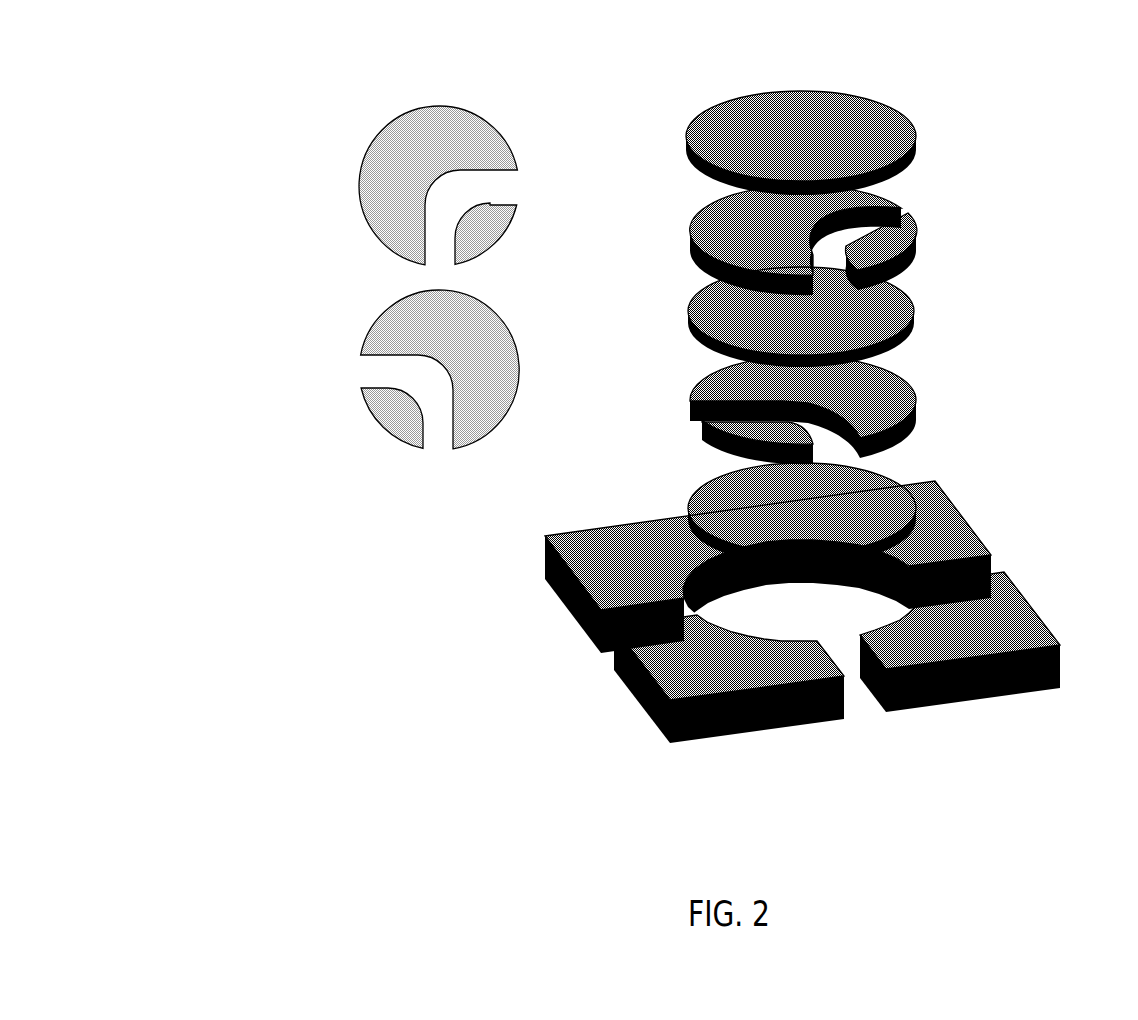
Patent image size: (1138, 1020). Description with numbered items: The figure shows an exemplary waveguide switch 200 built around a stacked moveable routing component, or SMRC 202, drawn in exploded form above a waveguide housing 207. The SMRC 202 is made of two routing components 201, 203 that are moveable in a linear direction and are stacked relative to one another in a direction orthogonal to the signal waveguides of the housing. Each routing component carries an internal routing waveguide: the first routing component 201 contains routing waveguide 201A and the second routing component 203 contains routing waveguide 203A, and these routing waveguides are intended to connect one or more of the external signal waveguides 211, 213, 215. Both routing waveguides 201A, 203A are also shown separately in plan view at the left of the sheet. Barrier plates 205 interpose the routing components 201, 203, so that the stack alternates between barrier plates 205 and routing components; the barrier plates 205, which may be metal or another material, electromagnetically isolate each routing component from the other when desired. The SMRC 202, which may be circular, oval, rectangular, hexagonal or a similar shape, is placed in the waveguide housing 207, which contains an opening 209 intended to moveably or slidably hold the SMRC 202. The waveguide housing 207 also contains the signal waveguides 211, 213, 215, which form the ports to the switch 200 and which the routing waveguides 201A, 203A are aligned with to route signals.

The waveguide switch 200 is at (202, 50).
The routing component 201 is at (488, 213).
The routing waveguide 201A is at (500, 187).
The stacked moveable routing component 202 is at (1015, 210).
The routing component 203 is at (488, 368).
The routing waveguide 203A is at (353, 368).
The barrier plate 205 is at (907, 460).
The waveguide housing 207 is at (975, 520).
The opening 209 is at (717, 565).
The signal waveguide 211 is at (1008, 557).
The signal waveguide 213 is at (852, 703).
The signal waveguide 215 is at (590, 648).